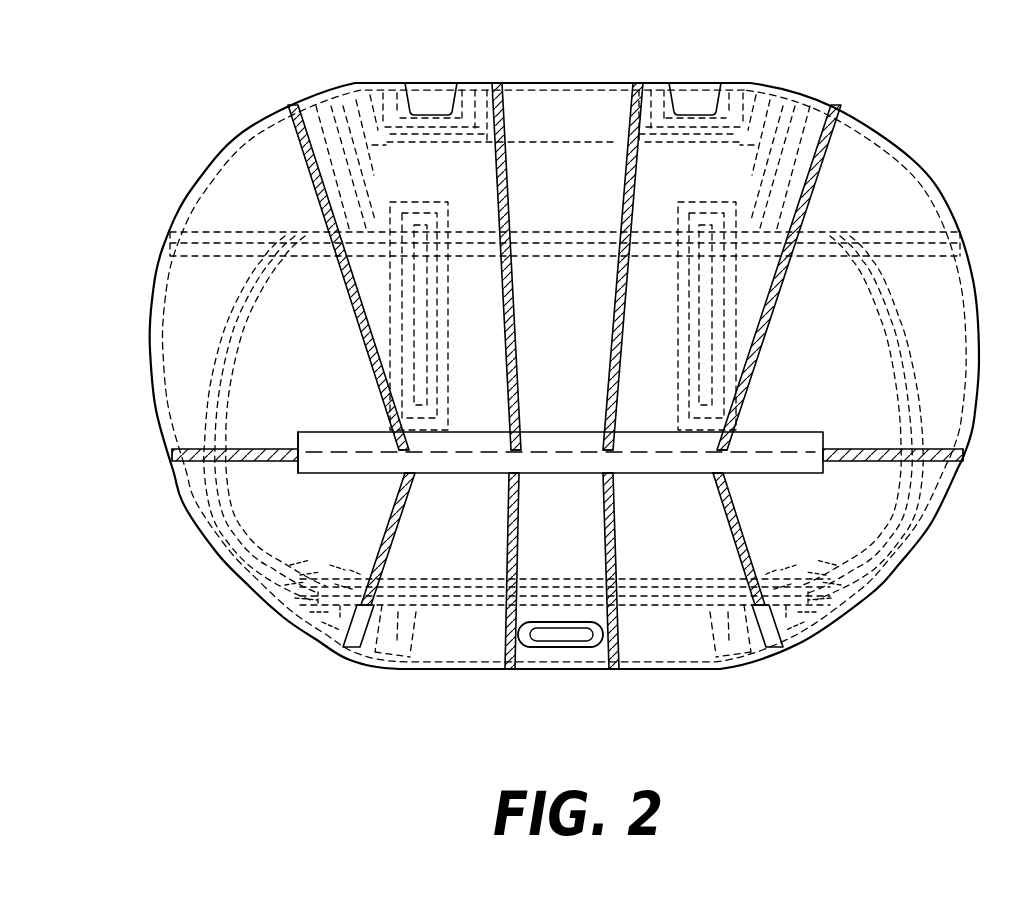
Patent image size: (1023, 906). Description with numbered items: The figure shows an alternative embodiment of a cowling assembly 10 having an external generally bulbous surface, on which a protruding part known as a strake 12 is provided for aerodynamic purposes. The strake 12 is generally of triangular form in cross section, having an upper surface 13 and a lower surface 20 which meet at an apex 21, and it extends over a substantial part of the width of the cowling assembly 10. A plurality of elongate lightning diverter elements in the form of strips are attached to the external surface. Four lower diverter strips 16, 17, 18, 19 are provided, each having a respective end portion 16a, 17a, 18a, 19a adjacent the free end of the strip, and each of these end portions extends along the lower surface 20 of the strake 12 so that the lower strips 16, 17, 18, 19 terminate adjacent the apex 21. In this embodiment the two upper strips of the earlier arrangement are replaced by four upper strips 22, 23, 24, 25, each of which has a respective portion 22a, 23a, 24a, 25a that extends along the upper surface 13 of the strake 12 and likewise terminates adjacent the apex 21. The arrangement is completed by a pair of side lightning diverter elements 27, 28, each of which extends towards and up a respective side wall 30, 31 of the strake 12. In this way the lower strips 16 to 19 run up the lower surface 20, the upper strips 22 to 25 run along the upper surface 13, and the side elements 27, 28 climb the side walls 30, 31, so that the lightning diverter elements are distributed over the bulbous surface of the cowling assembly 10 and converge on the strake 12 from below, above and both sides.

The cowling assembly 10 is at (846, 106).
The strake 12 is at (563, 433).
The upper surface 13 is at (322, 446).
The lower diverter strip 16 is at (380, 565).
The end portion 16a is at (415, 474).
The lower diverter strip 17 is at (517, 650).
The end portion 17a is at (530, 474).
The lower diverter strip 18 is at (616, 623).
The end portion 18a is at (623, 474).
The lower diverter strip 19 is at (748, 553).
The end portion 19a is at (746, 474).
The lower surface 20 is at (338, 473).
The apex 21 is at (483, 451).
The upper diverter strip 22 is at (352, 314).
The portion 22a is at (400, 446).
The upper diverter strip 23 is at (512, 315).
The portion 23a is at (521, 446).
The upper diverter strip 24 is at (656, 308).
The portion 24a is at (611, 446).
The upper diverter strip 25 is at (784, 300).
The portion 25a is at (727, 447).
The side lightning diverter element 27 is at (183, 464).
The side lightning diverter element 28 is at (963, 462).
The side wall 30 is at (298, 447).
The side wall 31 is at (823, 451).